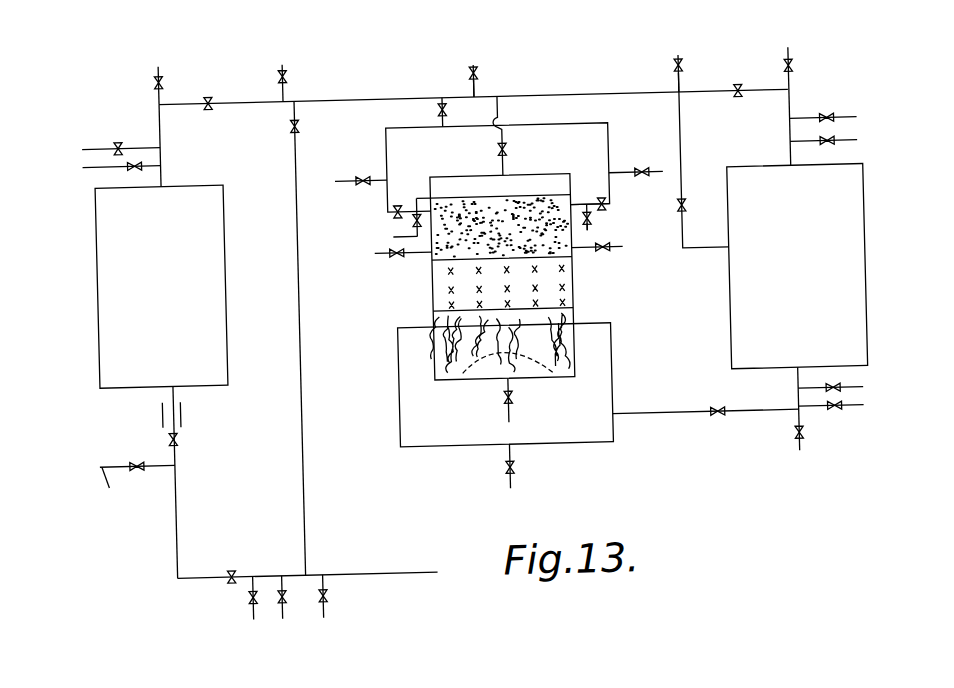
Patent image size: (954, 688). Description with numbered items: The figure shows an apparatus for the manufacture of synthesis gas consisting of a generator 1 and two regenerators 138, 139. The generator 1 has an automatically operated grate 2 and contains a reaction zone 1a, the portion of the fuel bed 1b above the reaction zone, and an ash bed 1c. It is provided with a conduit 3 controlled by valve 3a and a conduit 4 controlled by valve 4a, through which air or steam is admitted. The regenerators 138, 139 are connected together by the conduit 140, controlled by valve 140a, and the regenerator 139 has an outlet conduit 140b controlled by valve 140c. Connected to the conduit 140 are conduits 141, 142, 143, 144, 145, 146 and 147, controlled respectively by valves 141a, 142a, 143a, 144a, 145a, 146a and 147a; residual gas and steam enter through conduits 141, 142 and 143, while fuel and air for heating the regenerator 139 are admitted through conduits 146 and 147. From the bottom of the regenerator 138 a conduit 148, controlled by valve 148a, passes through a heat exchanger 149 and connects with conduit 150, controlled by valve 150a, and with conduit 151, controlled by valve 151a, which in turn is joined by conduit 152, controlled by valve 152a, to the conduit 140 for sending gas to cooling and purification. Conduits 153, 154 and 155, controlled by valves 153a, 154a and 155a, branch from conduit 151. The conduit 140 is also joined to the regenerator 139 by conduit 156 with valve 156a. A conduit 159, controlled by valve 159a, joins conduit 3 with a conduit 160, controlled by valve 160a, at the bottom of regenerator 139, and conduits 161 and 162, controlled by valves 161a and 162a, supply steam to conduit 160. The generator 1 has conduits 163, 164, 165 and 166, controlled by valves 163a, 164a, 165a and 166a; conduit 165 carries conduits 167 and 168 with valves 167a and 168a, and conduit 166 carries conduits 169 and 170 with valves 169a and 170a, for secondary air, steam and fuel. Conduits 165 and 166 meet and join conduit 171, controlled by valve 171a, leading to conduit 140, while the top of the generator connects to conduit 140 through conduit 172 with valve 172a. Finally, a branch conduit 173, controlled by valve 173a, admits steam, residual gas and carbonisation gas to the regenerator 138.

The generator 1 is at (581, 179).
The reaction zone 1a is at (568, 297).
The fuel bed 1b is at (467, 203).
The ash bed 1c is at (575, 330).
The grate 2 is at (481, 356).
The conduit 3 is at (398, 402).
The valve 3a is at (520, 473).
The conduit 4 is at (514, 383).
The valve 4a is at (505, 403).
The regenerator 138 is at (98, 283).
The regenerator 139 is at (874, 287).
The conduit 140 is at (235, 97).
The valve 140a is at (214, 91).
The outlet conduit 140b is at (794, 55).
The valve 140c is at (799, 71).
The conduit 141 is at (104, 163).
The valve 141a is at (139, 162).
The conduit 142 is at (105, 139).
The valve 142a is at (133, 119).
The conduit 143 is at (289, 62).
The valve 143a is at (293, 73).
The conduit 144 is at (480, 68).
The valve 144a is at (482, 90).
The conduit 145 is at (688, 60).
The valve 145a is at (684, 72).
The conduit 146 is at (861, 122).
The valve 146a is at (829, 122).
The conduit 147 is at (862, 147).
The valve 147a is at (852, 150).
The conduit 148 is at (171, 496).
The valve 148a is at (174, 435).
The heat exchanger 149 is at (180, 406).
The conduit 150 is at (131, 487).
The valve 150a is at (135, 455).
The conduit 151 is at (184, 570).
The valve 151a is at (226, 566).
The conduit 152 is at (303, 499).
The valve 152a is at (304, 123).
The conduit 153 is at (246, 610).
The valve 153a is at (243, 592).
The conduit 154 is at (275, 602).
The valve 154a is at (280, 596).
The conduit 155 is at (320, 608).
The valve 155a is at (322, 594).
The conduit 156 is at (685, 162).
The valve 156a is at (688, 212).
The conduit 159 is at (685, 420).
The valve 159a is at (720, 424).
The conduit 160 is at (796, 425).
The valve 160a is at (801, 448).
The conduit 161 is at (862, 396).
The valve 161a is at (839, 396).
The conduit 162 is at (857, 414).
The valve 162a is at (834, 418).
The conduit 163 is at (396, 255).
The valve 163a is at (400, 253).
The conduit 164 is at (625, 251).
The valve 164a is at (605, 255).
The conduit 165 is at (390, 180).
The valve 165a is at (396, 211).
The conduit 166 is at (618, 195).
The valve 166a is at (596, 216).
The conduit 167 is at (388, 237).
The valve 167a is at (421, 204).
The conduit 168 is at (342, 180).
The valve 168a is at (367, 175).
The conduit 169 is at (606, 202).
The valve 169a is at (595, 228).
The conduit 170 is at (627, 176).
The valve 170a is at (646, 172).
The conduit 171 is at (448, 104).
The valve 171a is at (445, 109).
The conduit 172 is at (506, 111).
The valve 172a is at (512, 151).
The branch conduit 173 is at (165, 70).
The valve 173a is at (160, 77).